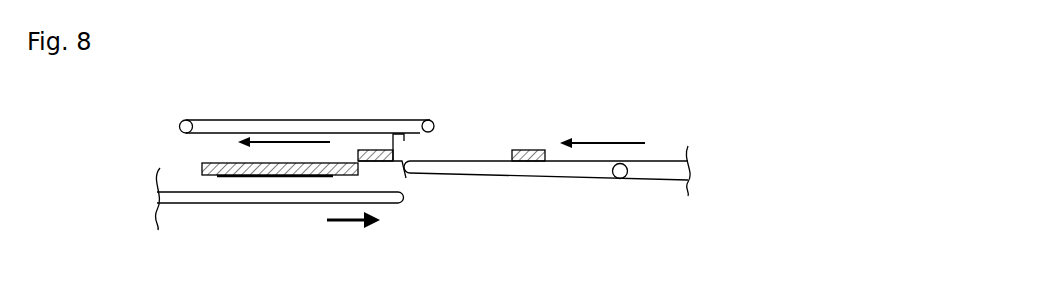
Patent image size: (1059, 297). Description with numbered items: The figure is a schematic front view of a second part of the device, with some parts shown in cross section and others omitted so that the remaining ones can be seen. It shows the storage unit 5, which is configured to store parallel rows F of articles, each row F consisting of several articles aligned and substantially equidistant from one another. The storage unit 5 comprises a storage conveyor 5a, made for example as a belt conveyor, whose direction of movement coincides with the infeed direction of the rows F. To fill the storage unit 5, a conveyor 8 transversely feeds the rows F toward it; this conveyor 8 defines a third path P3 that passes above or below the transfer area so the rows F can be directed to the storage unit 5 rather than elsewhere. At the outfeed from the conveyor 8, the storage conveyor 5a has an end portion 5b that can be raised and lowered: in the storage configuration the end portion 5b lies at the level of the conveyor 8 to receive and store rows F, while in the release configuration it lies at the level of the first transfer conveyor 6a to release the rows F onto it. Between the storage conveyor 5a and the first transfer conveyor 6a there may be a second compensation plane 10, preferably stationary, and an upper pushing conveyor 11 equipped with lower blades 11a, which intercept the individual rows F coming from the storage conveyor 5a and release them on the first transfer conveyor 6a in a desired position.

The storage unit 5 is at (547, 181).
The storage conveyor 5a is at (660, 160).
The end portion 5b is at (552, 184).
The first transfer conveyor 6a is at (243, 182).
The conveyor 8 is at (287, 210).
The second compensation plane 10 is at (406, 178).
The upper pushing conveyor 11 is at (353, 116).
The lower blades 11a is at (404, 142).
The row F is at (527, 150).
The third path P3 is at (353, 234).